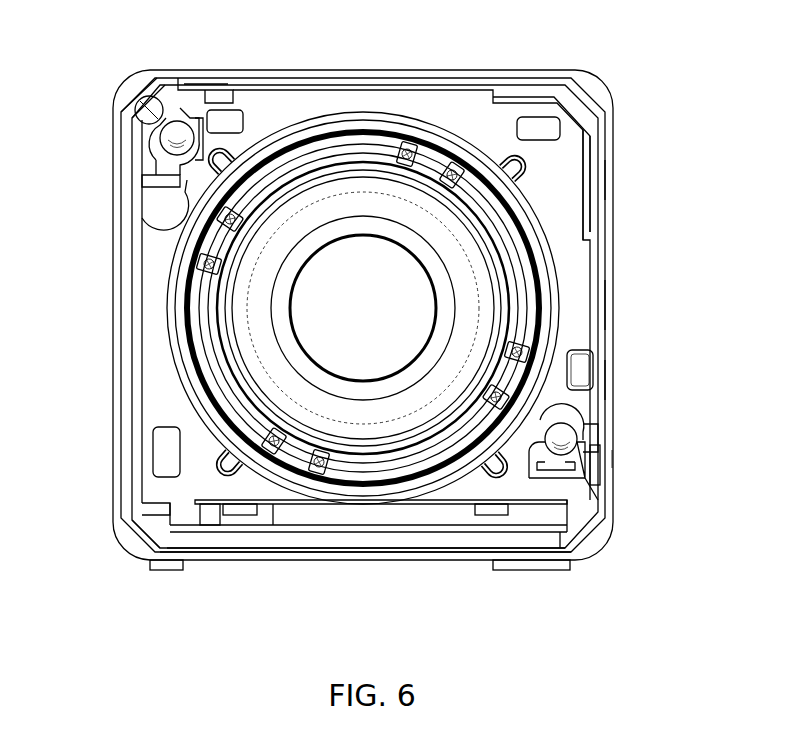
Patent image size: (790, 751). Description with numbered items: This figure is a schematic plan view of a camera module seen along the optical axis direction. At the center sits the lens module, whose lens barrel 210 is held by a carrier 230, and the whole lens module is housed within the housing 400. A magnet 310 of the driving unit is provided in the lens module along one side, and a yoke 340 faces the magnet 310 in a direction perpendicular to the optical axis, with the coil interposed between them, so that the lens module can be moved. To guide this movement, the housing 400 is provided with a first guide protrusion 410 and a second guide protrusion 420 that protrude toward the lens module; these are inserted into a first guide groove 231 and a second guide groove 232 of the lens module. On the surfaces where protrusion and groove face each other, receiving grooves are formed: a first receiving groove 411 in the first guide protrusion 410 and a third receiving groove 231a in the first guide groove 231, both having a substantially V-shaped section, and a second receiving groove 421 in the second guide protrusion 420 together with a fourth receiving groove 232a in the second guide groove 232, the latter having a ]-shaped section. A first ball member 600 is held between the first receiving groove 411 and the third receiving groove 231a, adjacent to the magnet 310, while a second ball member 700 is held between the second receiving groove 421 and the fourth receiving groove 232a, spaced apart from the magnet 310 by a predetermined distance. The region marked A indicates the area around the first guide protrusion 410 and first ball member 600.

The second ball member 700 is at (128, 100).
The carrier 230 is at (585, 275).
The first guide groove 231 is at (535, 500).
The third receiving groove 231a is at (615, 405).
The second guide groove 232 is at (143, 208).
The fourth receiving groove 232a is at (184, 110).
The lens barrel 210 is at (237, 322).
The magnet 310 is at (360, 515).
The yoke 340 is at (430, 560).
The housing 400 is at (613, 493).
The first guide protrusion 410 is at (617, 470).
The first receiving groove 411 is at (622, 438).
The second guide protrusion 420 is at (147, 157).
The second receiving groove 421 is at (153, 127).
The first ball member 600 is at (618, 418).
The region A is at (620, 458).